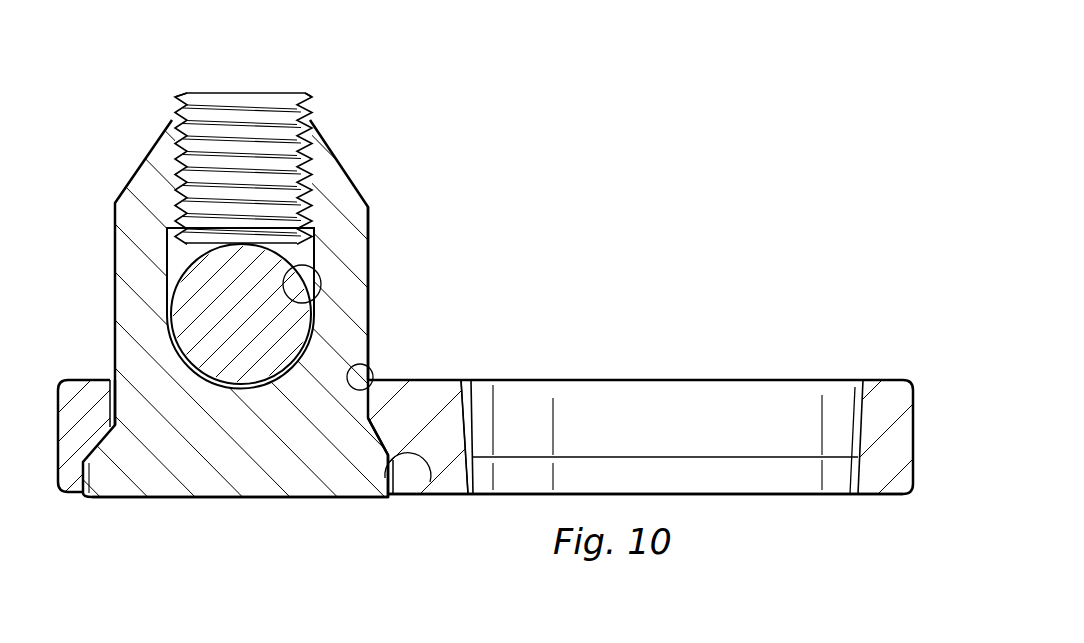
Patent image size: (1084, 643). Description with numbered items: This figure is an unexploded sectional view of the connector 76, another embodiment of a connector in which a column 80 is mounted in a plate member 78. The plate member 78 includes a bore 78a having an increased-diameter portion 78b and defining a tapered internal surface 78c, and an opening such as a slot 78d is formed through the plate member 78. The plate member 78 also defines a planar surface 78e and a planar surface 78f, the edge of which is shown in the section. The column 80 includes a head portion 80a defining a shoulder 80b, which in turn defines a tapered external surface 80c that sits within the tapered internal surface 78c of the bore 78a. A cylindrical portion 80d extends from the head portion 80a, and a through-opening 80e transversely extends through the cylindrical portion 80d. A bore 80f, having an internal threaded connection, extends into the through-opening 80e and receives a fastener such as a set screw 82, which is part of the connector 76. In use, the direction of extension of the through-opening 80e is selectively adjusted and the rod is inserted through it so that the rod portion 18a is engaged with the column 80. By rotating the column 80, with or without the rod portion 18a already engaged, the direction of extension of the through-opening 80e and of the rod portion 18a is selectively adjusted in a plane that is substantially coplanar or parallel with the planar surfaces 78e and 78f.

The connector 76 is at (558, 113).
The plate member 78 is at (920, 391).
The bore 78a is at (370, 362).
The increased-diameter portion 78b is at (370, 498).
The tapered internal surface 78c is at (121, 433).
The slot 78d is at (858, 397).
The planar surface 78e is at (447, 380).
The planar surface 78f is at (890, 496).
The column 80 is at (126, 166).
The head portion 80a is at (222, 498).
The shoulder 80b is at (418, 494).
The tapered external surface 80c is at (95, 460).
The cylindrical portion 80d is at (371, 222).
The through-opening 80e is at (322, 300).
The bore 80f is at (186, 148).
The set screw 82 is at (278, 92).
The rod portion 18a is at (262, 327).